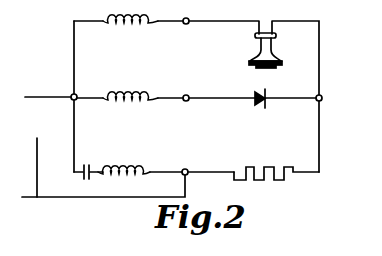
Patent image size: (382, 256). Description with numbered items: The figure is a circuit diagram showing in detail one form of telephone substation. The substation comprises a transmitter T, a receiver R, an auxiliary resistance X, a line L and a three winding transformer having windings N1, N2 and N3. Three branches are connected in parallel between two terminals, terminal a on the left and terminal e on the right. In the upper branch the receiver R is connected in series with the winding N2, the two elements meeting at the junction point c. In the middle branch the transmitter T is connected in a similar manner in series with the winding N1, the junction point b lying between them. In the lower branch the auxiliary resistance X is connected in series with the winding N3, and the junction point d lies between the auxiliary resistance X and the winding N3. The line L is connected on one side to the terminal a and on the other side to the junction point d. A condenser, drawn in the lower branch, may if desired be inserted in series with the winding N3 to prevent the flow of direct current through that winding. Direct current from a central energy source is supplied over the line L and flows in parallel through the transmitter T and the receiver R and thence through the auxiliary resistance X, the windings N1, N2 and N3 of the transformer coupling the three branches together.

The line L is at (43, 99).
The terminal a is at (66, 90).
The junction point b is at (185, 90).
The junction point c is at (188, 12).
The junction point d is at (186, 162).
The terminal e is at (326, 100).
The winding N1 is at (130, 108).
The winding N2 is at (130, 31).
The winding N3 is at (117, 163).
The receiver R is at (271, 50).
The transmitter T is at (254, 107).
The auxiliary resistance X is at (276, 184).